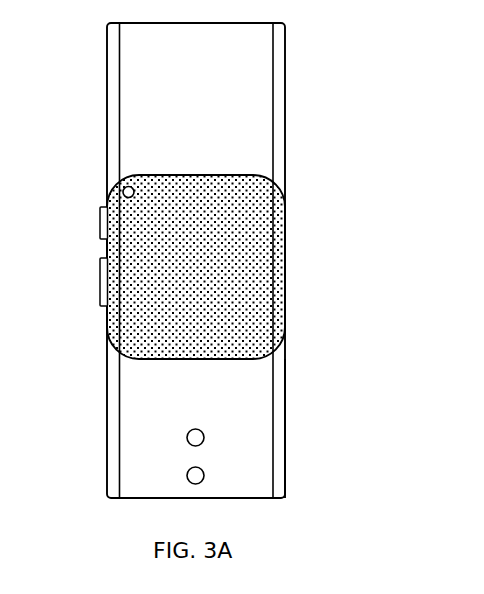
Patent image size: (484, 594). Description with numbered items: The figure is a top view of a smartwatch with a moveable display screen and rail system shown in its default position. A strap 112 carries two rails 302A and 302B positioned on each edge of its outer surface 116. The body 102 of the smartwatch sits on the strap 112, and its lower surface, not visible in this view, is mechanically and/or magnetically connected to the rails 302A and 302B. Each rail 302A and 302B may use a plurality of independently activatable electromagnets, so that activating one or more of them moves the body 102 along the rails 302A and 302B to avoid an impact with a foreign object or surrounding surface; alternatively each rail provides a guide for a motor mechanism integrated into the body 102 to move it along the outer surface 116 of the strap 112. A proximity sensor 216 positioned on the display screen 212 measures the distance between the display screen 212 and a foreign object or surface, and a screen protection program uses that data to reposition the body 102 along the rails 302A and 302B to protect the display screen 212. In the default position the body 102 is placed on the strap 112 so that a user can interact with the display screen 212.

The body 102 is at (285, 233).
The strap 112 is at (285, 374).
The outer surface 116 is at (242, 408).
The display screen 212 is at (247, 291).
The proximity sensor 216 is at (123, 192).
The rail 302A is at (115, 144).
The rail 302B is at (278, 151).